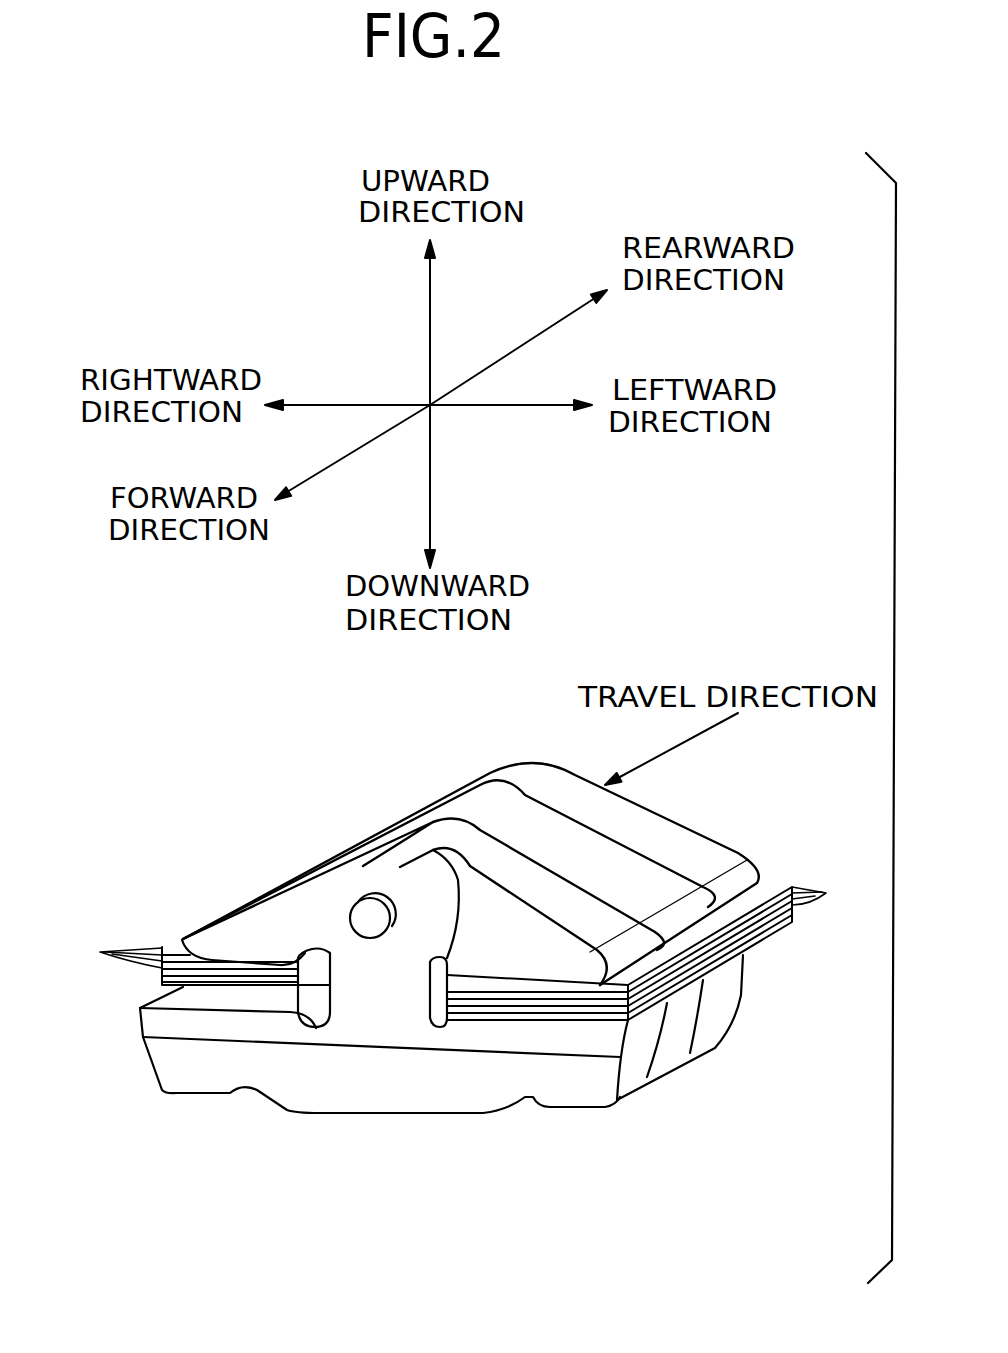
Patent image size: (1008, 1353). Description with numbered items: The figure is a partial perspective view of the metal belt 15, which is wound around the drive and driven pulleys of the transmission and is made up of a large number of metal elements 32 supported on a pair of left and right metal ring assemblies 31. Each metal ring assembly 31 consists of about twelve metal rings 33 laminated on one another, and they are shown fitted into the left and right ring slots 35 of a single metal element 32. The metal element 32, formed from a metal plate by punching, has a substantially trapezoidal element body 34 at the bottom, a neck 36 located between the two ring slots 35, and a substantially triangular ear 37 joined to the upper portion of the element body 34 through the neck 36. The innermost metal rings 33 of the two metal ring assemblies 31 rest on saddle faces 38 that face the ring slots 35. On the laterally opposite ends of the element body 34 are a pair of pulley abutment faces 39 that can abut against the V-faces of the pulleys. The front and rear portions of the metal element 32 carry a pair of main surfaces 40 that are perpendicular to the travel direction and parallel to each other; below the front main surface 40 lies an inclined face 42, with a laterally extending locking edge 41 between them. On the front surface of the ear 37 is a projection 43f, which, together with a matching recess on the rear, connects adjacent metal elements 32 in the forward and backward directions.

The metal belt 15 is at (440, 775).
The metal ring assembly 31 is at (175, 937).
The metal element 32 is at (411, 1106).
The metal ring 33 is at (463, 921).
The element body 34 is at (178, 1077).
The ring slot 35 is at (316, 1012).
The neck 36 is at (378, 1018).
The ear 37 is at (307, 910).
The saddle face 38 is at (228, 995).
The pulley abutment face 39 is at (630, 1077).
The main surface 40 is at (320, 883).
The locking edge 41 is at (300, 1043).
The inclined face 42 is at (404, 1107).
The projection 43f is at (370, 913).